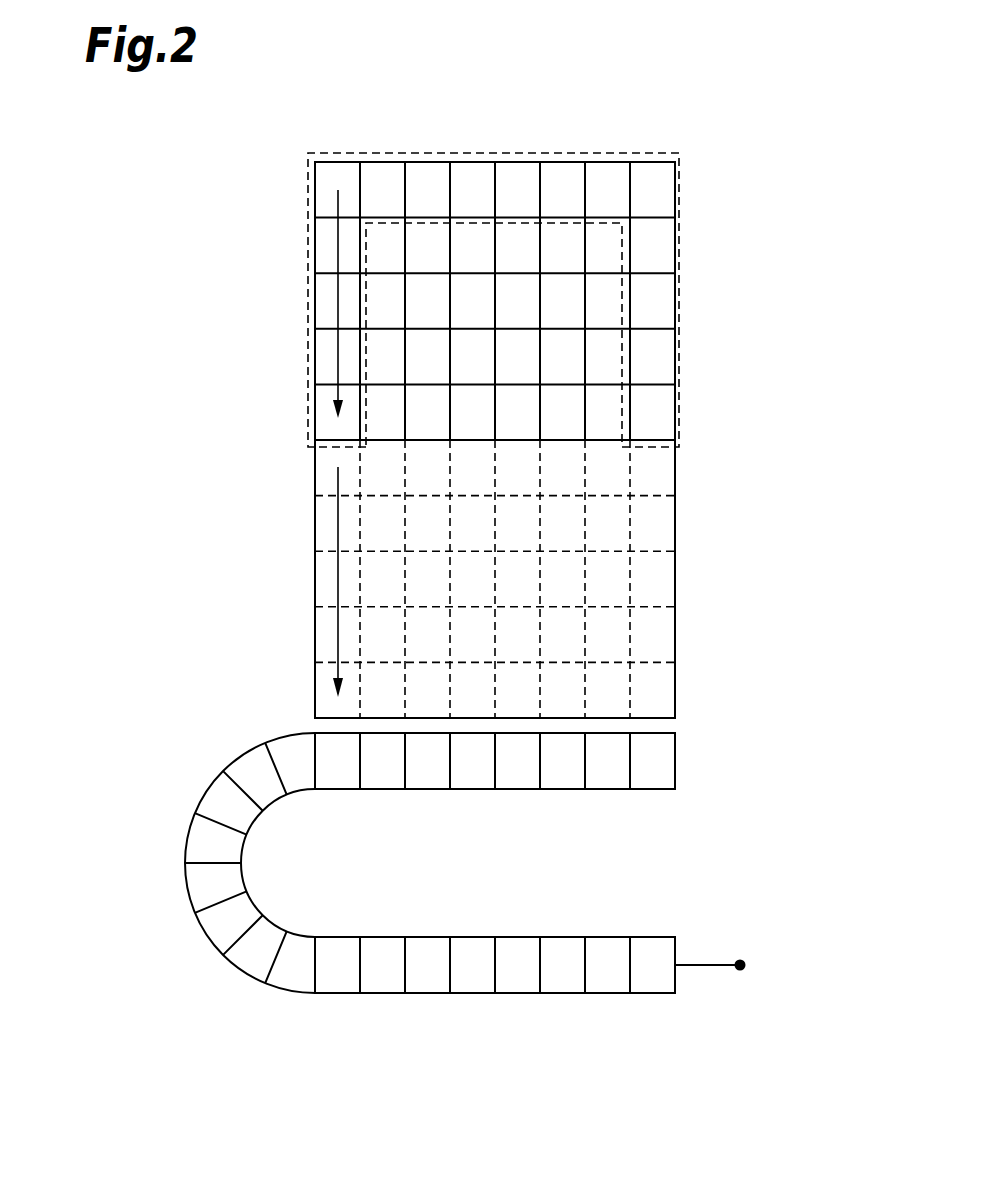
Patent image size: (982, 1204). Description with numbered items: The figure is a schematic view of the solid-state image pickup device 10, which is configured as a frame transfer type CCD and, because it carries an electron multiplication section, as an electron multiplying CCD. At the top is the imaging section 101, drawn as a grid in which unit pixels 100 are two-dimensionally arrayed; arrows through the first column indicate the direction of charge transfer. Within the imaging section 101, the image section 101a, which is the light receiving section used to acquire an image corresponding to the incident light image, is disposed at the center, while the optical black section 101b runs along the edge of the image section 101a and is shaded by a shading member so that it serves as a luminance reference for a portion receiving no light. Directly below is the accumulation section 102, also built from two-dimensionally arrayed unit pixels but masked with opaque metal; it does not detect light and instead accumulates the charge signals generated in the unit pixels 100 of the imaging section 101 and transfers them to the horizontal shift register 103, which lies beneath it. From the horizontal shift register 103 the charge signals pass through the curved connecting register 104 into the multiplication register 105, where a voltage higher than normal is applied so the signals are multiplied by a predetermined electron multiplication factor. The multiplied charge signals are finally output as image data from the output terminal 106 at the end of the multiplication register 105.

The solid-state image pickup device 10 is at (600, 114).
The unit pixels 100 is at (388, 238).
The imaging section 101 is at (299, 162).
The image section 101a is at (496, 299).
The optical black section 101b is at (462, 152).
The accumulation section 102 is at (299, 447).
The horizontal shift register 103 is at (675, 795).
The connecting register 104 is at (242, 860).
The multiplication register 105 is at (675, 1001).
The output terminal 106 is at (741, 958).